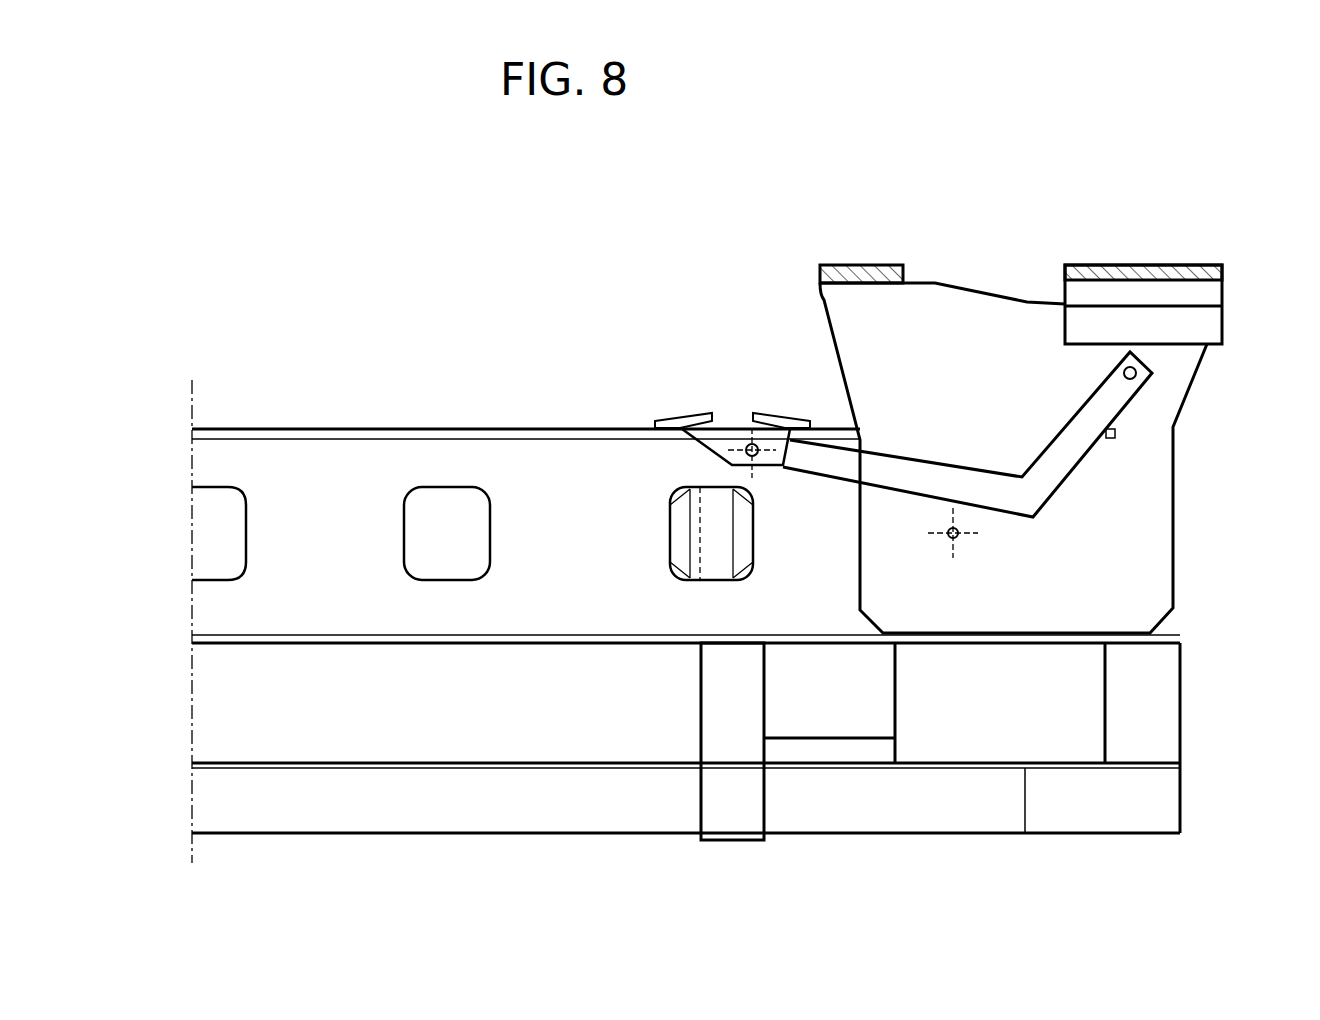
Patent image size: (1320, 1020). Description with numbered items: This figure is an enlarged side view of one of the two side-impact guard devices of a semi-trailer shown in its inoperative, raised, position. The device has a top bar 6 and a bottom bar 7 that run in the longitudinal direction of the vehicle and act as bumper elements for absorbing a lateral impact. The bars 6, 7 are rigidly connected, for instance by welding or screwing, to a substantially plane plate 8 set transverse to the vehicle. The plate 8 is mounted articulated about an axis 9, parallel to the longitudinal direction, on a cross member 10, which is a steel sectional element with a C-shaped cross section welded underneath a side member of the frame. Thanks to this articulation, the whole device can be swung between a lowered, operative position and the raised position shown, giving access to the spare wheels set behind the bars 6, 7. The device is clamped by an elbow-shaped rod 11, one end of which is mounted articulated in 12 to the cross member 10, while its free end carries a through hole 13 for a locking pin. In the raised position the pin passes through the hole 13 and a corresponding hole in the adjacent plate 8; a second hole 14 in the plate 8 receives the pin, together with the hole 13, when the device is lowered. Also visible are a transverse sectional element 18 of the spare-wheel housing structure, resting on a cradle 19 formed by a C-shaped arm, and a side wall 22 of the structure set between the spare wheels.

The top bar 6 is at (840, 262).
The bottom bar 7 is at (1150, 262).
The plate 8 is at (1155, 533).
The axis 9 is at (958, 540).
The cross member 10 is at (480, 426).
The elbow-shaped rod 11 is at (1035, 457).
The articulation 12 is at (760, 456).
The through hole 13 is at (1138, 373).
The second hole 14 is at (1117, 436).
The transverse sectional element 18 is at (483, 835).
The cradle 19 is at (740, 815).
The side wall 22 is at (233, 695).